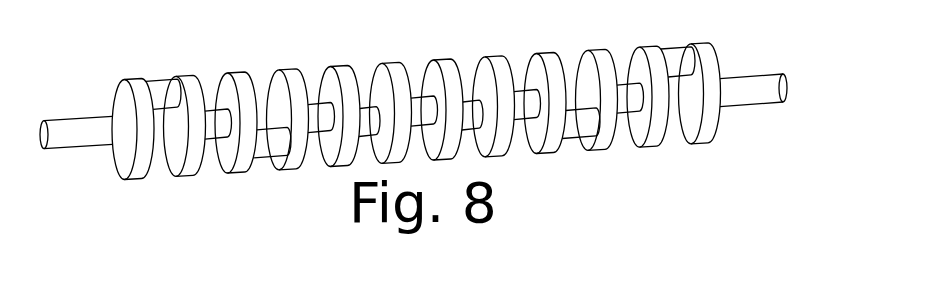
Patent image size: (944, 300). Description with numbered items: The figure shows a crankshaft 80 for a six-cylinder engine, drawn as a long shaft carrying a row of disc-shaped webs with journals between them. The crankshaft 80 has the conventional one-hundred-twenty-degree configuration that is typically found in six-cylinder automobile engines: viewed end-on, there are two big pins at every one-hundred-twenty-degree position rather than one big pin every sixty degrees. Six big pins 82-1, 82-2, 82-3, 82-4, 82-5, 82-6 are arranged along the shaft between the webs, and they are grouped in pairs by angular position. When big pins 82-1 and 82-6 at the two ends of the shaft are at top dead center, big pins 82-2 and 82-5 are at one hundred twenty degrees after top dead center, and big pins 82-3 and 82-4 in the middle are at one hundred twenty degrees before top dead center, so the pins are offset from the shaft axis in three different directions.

The crankshaft 80 is at (118, 216).
The big pin 82-1 is at (157, 95).
The big pin 82-2 is at (263, 150).
The big pin 82-3 is at (364, 118).
The big pin 82-4 is at (470, 117).
The big pin 82-5 is at (580, 128).
The big pin 82-6 is at (677, 60).